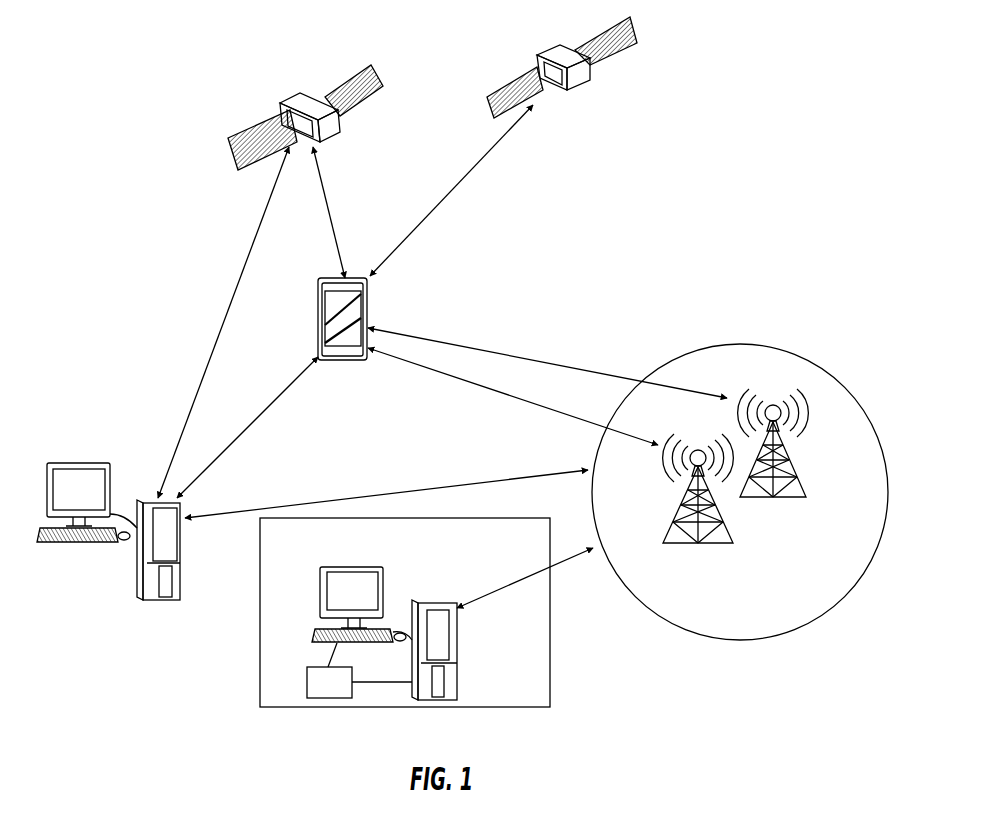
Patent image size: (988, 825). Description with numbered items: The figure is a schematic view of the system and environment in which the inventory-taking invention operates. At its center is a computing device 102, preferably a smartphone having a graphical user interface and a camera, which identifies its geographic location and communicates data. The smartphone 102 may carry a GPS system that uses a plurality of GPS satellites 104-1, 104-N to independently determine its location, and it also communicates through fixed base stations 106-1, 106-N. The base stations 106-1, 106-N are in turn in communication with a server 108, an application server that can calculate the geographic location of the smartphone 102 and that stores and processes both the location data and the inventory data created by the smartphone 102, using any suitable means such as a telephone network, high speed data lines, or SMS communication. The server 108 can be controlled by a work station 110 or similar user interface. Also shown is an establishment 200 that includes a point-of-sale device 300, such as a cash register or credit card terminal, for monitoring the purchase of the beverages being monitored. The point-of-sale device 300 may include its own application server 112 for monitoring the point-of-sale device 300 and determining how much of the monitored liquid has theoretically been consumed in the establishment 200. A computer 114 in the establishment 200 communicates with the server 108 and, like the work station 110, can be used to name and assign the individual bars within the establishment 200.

The computing device 102 is at (330, 331).
The GPS satellite 104-1 is at (309, 97).
The GPS satellite 104-N is at (556, 93).
The fixed base station 106-1 is at (790, 460).
The fixed base station 106-N is at (727, 523).
The server 108 is at (180, 566).
The work station 110 is at (110, 483).
The application server 112 is at (457, 667).
The computer 114 is at (384, 591).
The establishment 200 is at (260, 593).
The point-of-sale device 300 is at (307, 694).